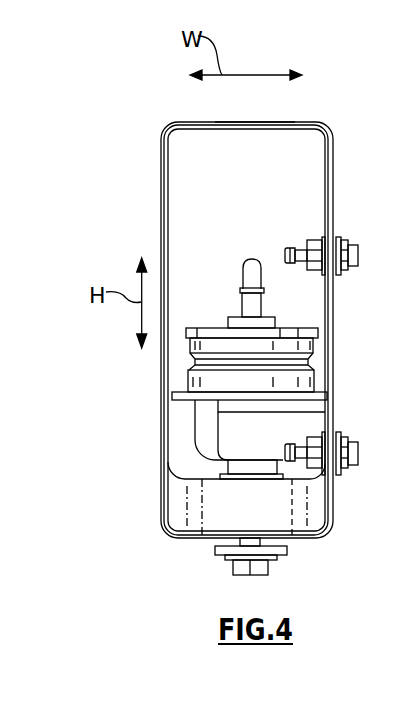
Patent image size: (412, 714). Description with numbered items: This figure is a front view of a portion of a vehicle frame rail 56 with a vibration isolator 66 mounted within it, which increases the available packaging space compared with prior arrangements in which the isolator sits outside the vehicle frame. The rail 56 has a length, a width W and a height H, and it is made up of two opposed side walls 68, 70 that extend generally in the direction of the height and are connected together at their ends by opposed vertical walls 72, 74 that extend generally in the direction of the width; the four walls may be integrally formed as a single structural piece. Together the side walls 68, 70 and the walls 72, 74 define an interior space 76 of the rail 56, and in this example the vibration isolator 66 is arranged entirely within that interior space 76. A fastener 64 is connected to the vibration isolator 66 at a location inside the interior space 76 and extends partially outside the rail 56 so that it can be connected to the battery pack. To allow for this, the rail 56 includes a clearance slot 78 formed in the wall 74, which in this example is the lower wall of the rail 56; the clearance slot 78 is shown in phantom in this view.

The rail 56 is at (259, 115).
The fastener 64 is at (252, 258).
The vibration isolator 66 is at (208, 308).
The side wall 68 is at (160, 414).
The side wall 70 is at (333, 192).
The vertical wall 72 is at (193, 122).
The vertical wall 74 is at (197, 538).
The interior space 76 is at (256, 166).
The clearance slot 78 is at (200, 507).